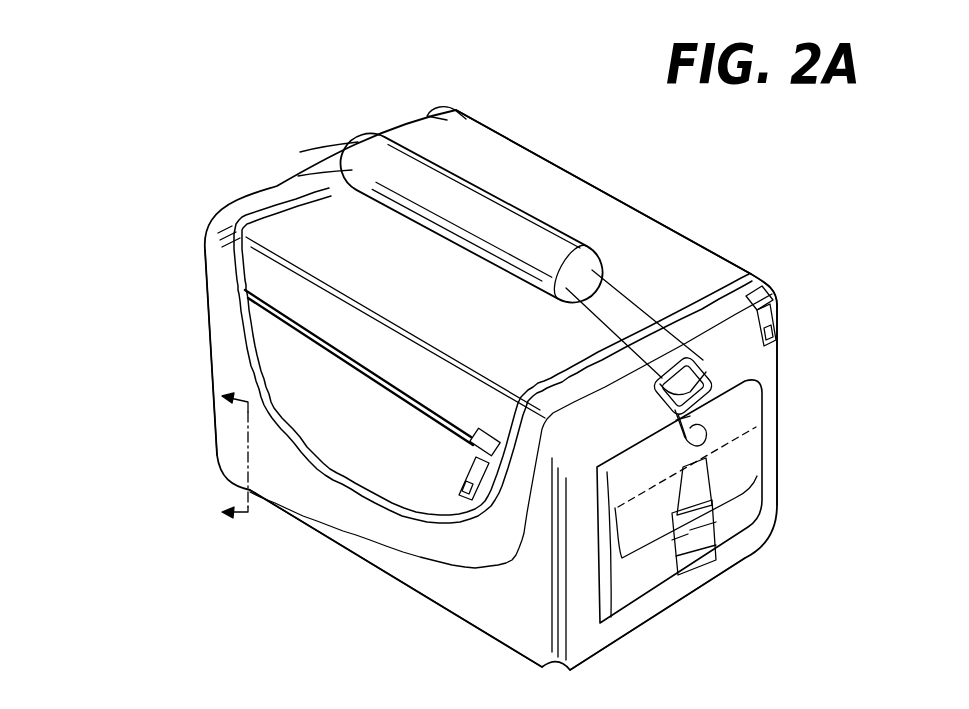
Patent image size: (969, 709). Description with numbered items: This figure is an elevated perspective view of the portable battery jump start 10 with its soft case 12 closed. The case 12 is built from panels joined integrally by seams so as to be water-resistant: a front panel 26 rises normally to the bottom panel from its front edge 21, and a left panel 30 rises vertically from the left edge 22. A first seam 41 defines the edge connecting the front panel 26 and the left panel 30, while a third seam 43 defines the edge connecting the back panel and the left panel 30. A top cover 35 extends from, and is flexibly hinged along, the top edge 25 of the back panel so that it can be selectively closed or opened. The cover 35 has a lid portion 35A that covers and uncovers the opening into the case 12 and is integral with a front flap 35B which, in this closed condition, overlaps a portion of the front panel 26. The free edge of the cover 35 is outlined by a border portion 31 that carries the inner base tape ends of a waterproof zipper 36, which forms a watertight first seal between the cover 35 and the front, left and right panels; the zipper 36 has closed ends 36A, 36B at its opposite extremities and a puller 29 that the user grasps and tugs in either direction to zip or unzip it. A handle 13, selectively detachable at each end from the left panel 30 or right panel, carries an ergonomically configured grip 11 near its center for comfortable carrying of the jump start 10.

The portable battery jump start 10 is at (153, 191).
The grip 11 is at (465, 209).
The case 12 is at (786, 523).
The handle 13 is at (617, 313).
The front edge 21 is at (366, 560).
The left edge 22 is at (620, 640).
The top edge 25 is at (537, 160).
The front panel 26 is at (545, 604).
The puller 29 is at (773, 326).
The left panel 30 is at (752, 374).
The border portion 31 is at (220, 290).
The top cover 35 is at (622, 228).
The lid portion 35A is at (290, 211).
The front flap 35B is at (268, 357).
The waterproof zipper 36 is at (716, 322).
The closed end 36A is at (781, 304).
The closed end 36B is at (434, 110).
The first seam 41 is at (550, 621).
The third seam 43 is at (781, 442).